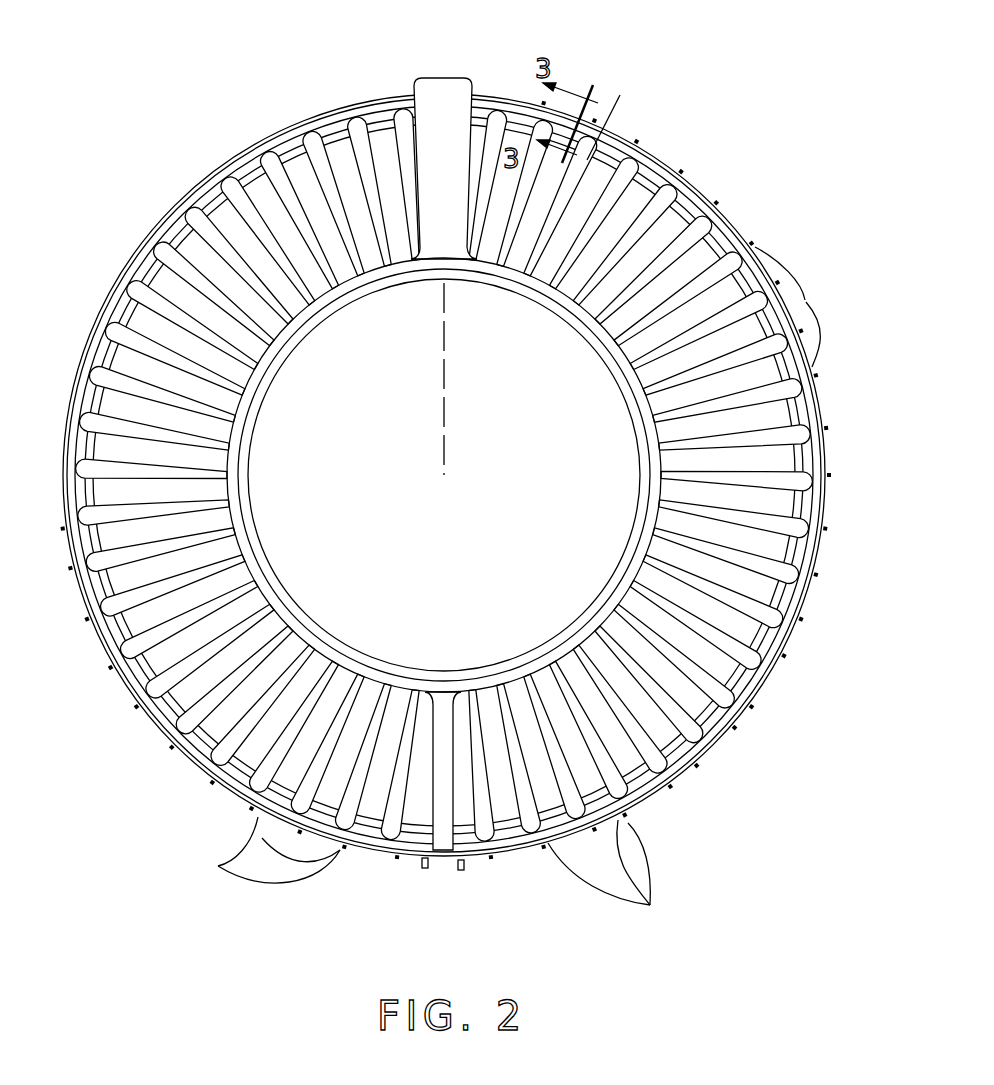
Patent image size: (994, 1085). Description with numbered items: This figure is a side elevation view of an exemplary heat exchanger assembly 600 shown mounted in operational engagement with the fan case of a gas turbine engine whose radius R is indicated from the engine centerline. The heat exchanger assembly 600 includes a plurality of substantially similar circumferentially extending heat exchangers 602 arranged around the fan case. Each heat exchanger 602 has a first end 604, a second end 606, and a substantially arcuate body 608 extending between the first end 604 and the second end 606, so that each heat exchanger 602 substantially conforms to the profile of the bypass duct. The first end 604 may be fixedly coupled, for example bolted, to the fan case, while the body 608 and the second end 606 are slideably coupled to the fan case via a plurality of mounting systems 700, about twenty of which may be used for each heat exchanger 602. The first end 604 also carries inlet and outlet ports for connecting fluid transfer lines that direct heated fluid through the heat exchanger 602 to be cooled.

The heat exchanger assembly 600 is at (458, 467).
The heat exchanger 602 is at (693, 123).
The first end 604 is at (815, 497).
The second end 606 is at (493, 95).
The arcuate body 608 is at (713, 196).
The mounting system 700 is at (516, 582).
The radius R is at (449, 378).